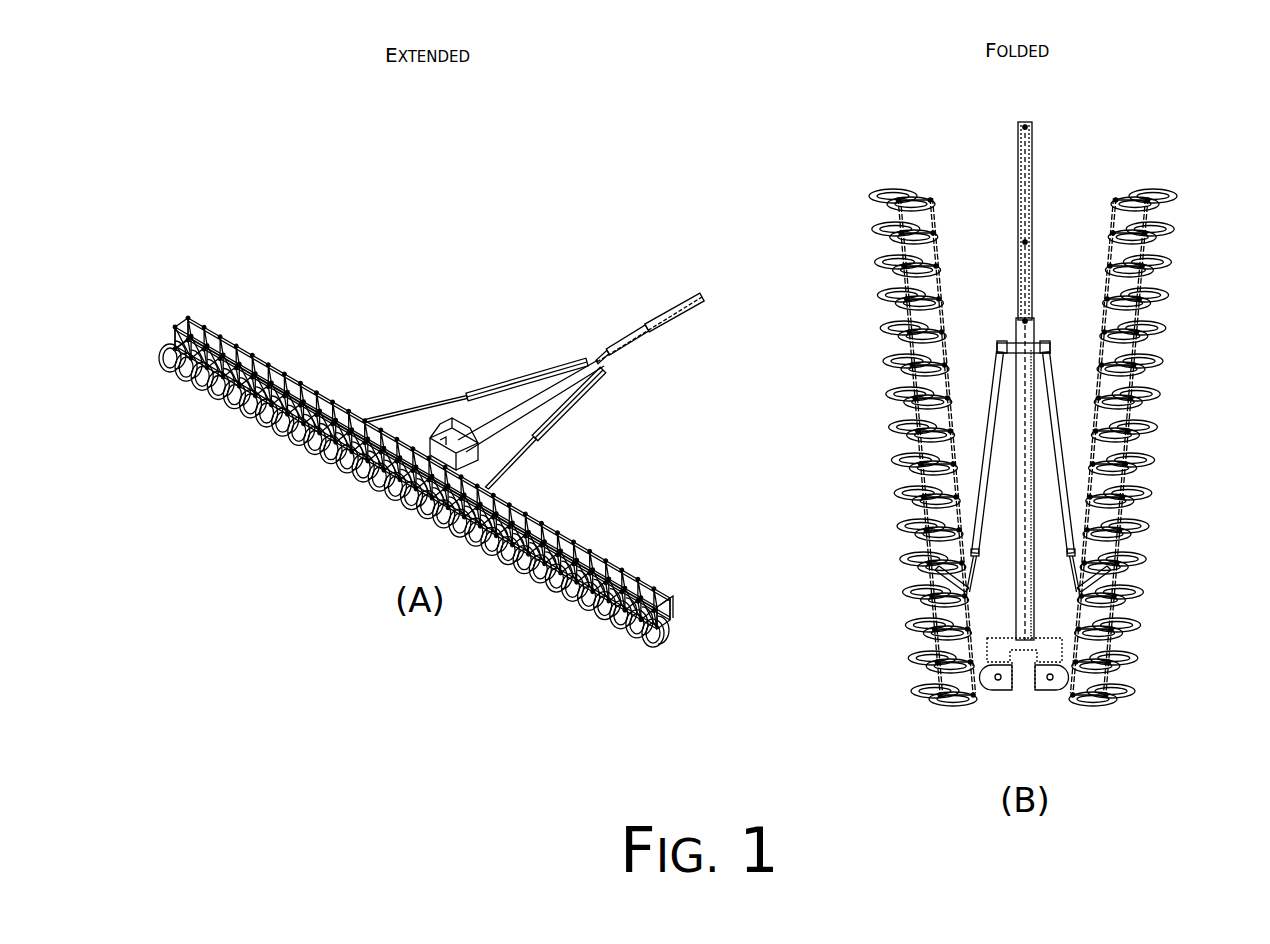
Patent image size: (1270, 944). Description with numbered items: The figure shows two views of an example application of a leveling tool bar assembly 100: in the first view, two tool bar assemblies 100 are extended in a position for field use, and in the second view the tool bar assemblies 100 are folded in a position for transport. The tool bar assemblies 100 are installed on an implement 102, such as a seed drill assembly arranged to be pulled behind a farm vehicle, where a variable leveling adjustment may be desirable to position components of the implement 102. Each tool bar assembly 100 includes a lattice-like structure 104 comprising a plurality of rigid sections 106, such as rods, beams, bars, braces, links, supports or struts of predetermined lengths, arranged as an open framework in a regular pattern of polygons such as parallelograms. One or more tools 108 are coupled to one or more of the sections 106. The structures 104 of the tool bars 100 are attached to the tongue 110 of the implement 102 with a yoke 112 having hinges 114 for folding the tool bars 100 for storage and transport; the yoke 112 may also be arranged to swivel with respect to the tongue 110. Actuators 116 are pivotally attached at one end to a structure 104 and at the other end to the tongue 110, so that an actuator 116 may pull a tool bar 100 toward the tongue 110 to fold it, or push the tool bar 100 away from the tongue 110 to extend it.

The leveling tool bar assembly 100 is at (336, 335).
The implement 102 is at (825, 190).
The lattice-like structure 104 is at (317, 397).
The rigid sections 106 is at (657, 583).
The tools 108 is at (315, 460).
The tongue 110 is at (623, 348).
The yoke 112 is at (1022, 690).
The hinges 114 is at (1047, 690).
The actuators 116 is at (538, 372).